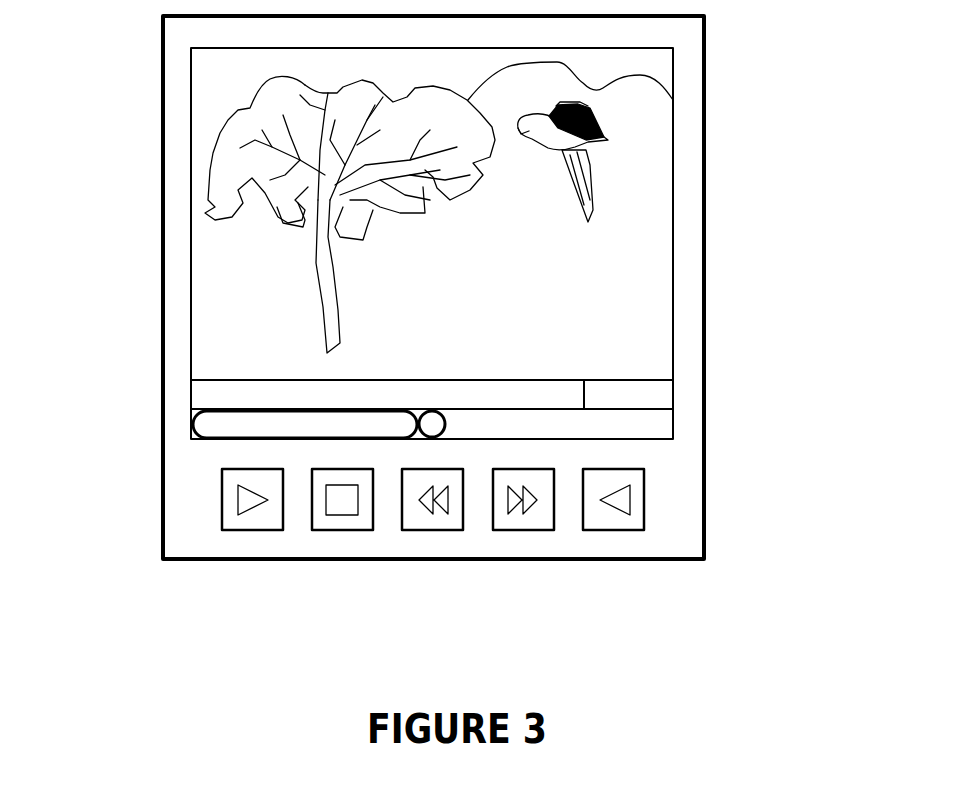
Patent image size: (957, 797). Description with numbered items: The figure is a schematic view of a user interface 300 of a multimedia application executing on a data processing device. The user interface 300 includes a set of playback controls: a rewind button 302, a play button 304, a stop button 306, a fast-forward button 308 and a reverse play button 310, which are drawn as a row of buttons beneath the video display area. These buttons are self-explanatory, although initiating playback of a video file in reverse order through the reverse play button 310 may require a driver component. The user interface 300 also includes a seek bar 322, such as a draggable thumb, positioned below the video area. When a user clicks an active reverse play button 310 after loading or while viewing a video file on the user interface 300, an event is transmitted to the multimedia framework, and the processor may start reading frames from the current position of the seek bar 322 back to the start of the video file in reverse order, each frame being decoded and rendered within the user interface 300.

The user interface 300 is at (705, 284).
The seek bar 322 is at (197, 423).
The play button 304 is at (237, 500).
The stop button 306 is at (344, 518).
The rewind button 302 is at (433, 518).
The fast-forward button 308 is at (523, 522).
The reverse play button 310 is at (633, 498).